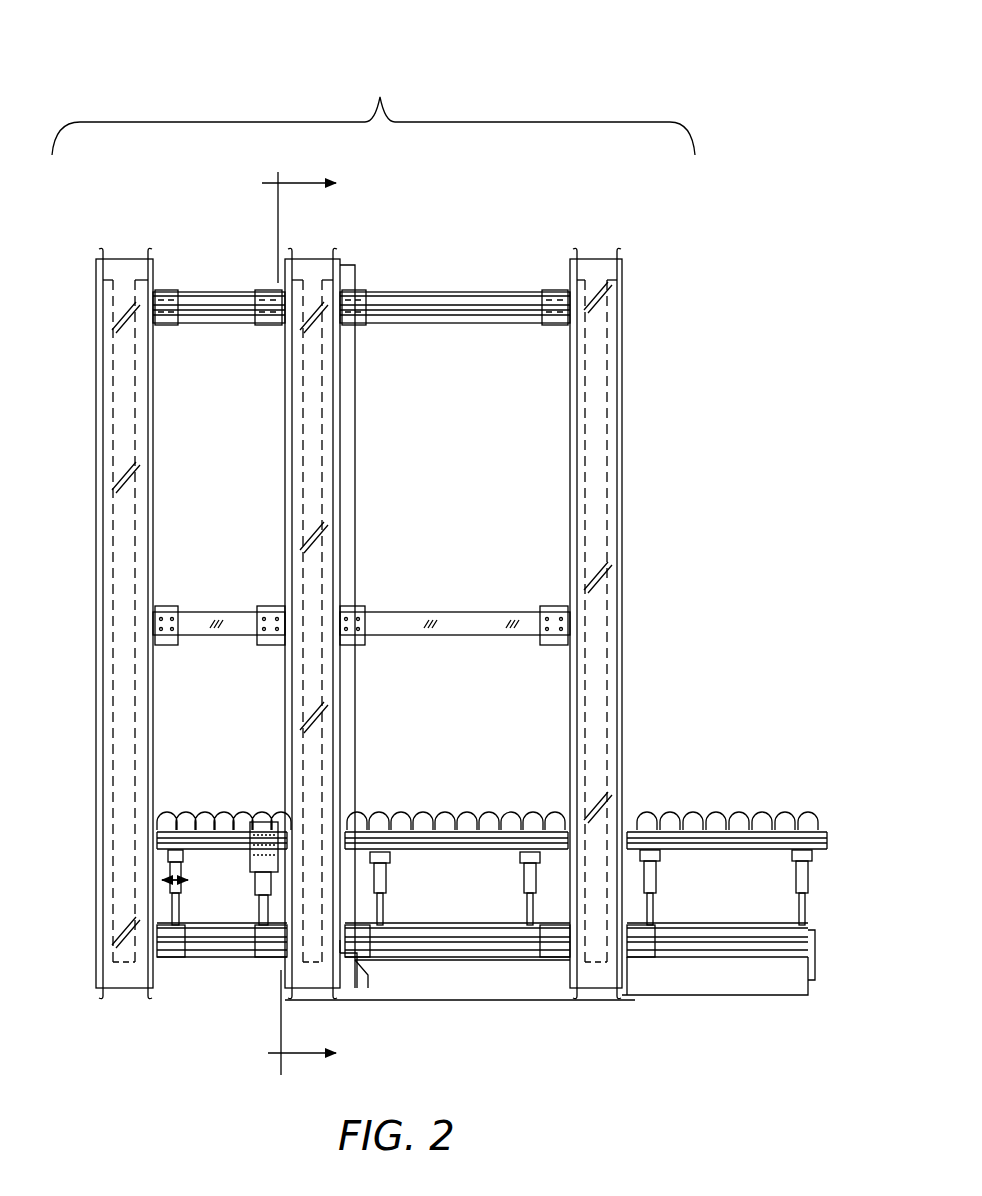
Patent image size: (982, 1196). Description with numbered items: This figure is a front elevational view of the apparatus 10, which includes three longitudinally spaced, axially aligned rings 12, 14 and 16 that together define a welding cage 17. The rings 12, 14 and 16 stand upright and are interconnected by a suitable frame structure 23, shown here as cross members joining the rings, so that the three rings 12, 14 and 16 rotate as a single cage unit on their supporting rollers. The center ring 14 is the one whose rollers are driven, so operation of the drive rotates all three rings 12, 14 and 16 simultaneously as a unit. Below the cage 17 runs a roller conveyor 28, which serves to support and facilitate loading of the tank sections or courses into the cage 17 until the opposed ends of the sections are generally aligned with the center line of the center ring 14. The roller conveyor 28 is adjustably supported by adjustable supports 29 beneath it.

The apparatus 10 is at (564, 93).
The ring 12 is at (130, 250).
The center ring 14 is at (312, 248).
The ring 16 is at (592, 248).
The welding cage 17 is at (373, 108).
The frame structure 23 is at (217, 328).
The roller conveyor 28 is at (208, 810).
The adjustable supports 29 is at (251, 878).